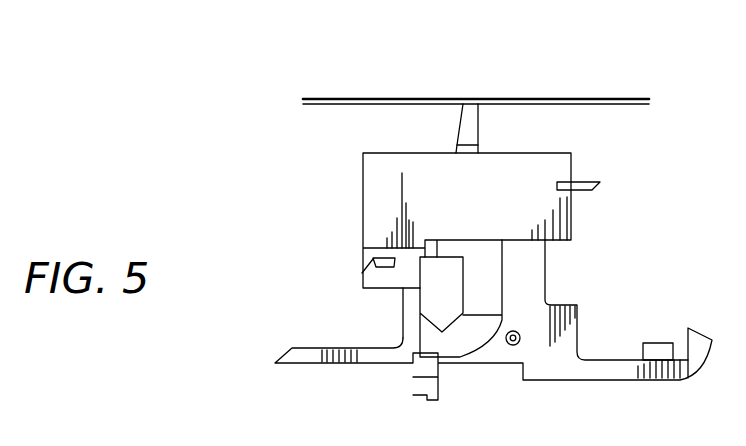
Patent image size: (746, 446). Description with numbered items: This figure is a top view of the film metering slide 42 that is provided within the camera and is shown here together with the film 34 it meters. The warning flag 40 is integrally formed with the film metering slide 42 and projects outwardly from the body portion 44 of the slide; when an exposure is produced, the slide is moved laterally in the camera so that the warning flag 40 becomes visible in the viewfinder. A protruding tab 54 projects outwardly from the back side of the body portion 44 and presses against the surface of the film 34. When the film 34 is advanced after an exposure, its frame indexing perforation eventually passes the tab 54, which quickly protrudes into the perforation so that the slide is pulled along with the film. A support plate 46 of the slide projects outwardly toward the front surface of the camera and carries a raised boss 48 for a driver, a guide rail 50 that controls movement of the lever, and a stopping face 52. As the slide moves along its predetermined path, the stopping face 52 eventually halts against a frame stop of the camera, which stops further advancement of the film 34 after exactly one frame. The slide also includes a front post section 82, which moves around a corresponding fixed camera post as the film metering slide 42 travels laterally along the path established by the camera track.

The film 34 is at (585, 100).
The film metering slide 42 is at (290, 133).
The protruding tab 54 is at (460, 120).
The stopping face 52 is at (363, 193).
The body portion 44 is at (455, 201).
The warning flag 40 is at (594, 190).
The front post section 82 is at (373, 262).
The support plate 46 is at (538, 310).
The raised boss 48 is at (520, 338).
The guide rail 50 is at (342, 362).